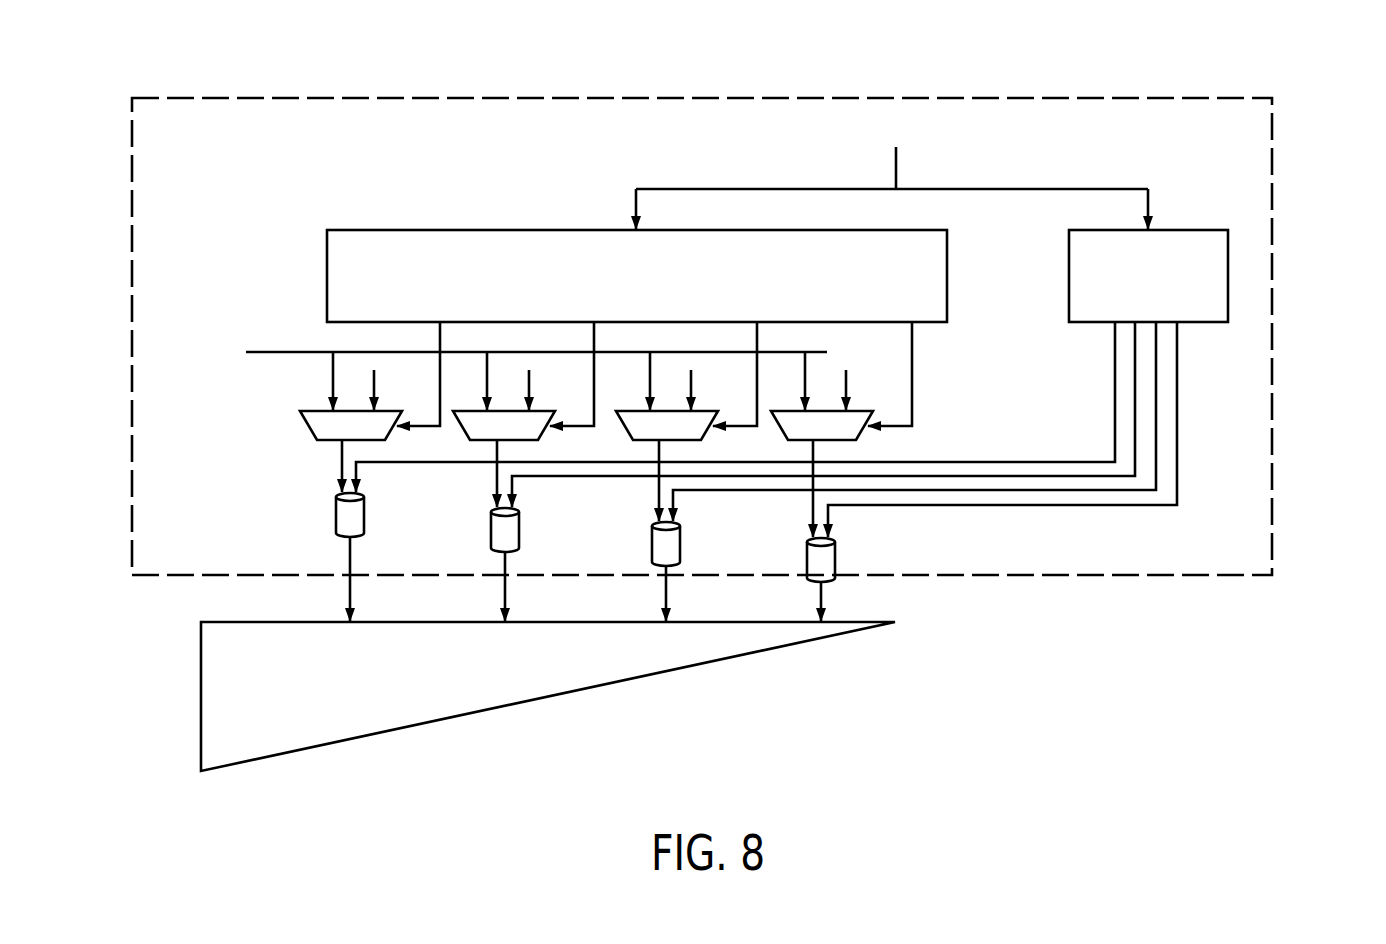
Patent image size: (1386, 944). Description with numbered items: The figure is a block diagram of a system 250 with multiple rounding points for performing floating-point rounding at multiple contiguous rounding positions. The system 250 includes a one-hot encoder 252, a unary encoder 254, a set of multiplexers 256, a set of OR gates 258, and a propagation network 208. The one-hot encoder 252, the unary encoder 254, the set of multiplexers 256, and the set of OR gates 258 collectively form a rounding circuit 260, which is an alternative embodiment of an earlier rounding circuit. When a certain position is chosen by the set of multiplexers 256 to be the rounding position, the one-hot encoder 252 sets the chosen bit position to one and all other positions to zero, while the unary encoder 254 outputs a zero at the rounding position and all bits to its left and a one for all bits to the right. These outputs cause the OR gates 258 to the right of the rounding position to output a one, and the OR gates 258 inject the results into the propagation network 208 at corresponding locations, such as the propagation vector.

The system 250 is at (114, 64).
The one-hot encoder 252 is at (617, 290).
The unary encoder 254 is at (1127, 293).
The set of multiplexers 256 is at (236, 428).
The set of OR gates 258 is at (271, 532).
The rounding circuit 260 is at (1272, 213).
The propagation network 208 is at (258, 695).